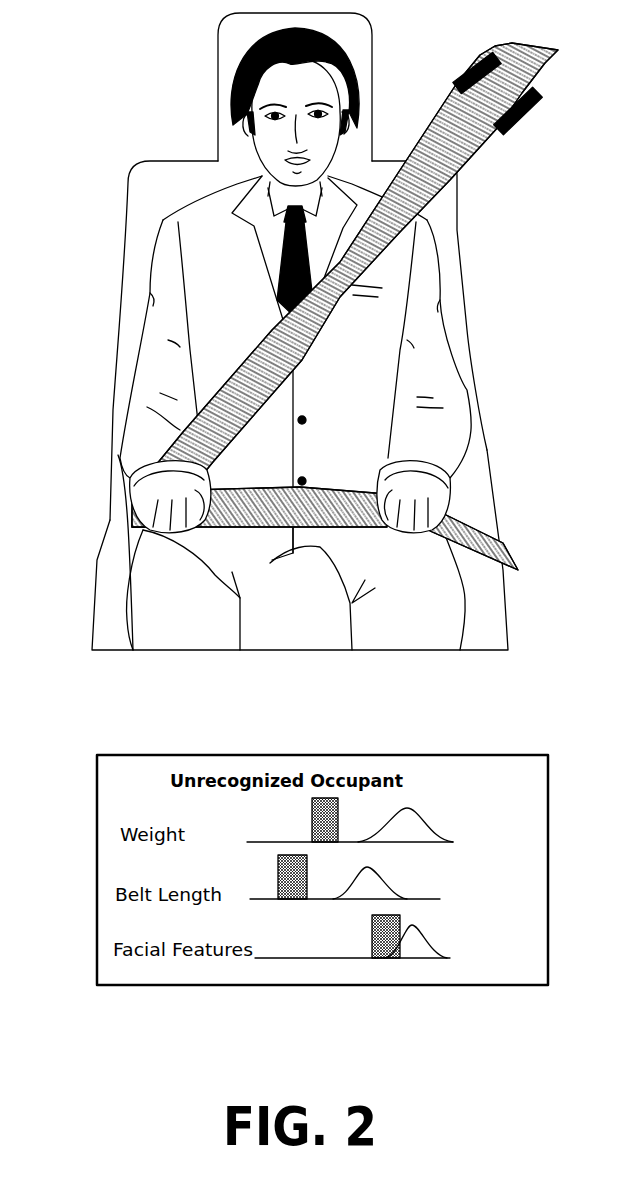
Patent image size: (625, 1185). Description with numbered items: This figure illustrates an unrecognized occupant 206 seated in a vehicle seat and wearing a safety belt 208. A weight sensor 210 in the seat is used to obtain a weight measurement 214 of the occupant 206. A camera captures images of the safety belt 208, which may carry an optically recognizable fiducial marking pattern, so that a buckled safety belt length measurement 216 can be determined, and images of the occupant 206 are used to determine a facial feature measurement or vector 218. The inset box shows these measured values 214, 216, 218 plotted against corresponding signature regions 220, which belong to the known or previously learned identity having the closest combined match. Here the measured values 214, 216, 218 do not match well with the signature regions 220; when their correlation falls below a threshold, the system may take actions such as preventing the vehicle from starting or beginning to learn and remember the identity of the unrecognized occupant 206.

The unrecognized occupant 206 is at (206, 135).
The safety belt 208 is at (492, 133).
The weight sensor 210 is at (108, 578).
The weight measurement 214 is at (410, 822).
The buckled safety belt length measurement 216 is at (372, 874).
The facial feature measurement 218 is at (417, 937).
The signature regions 220 is at (372, 922).